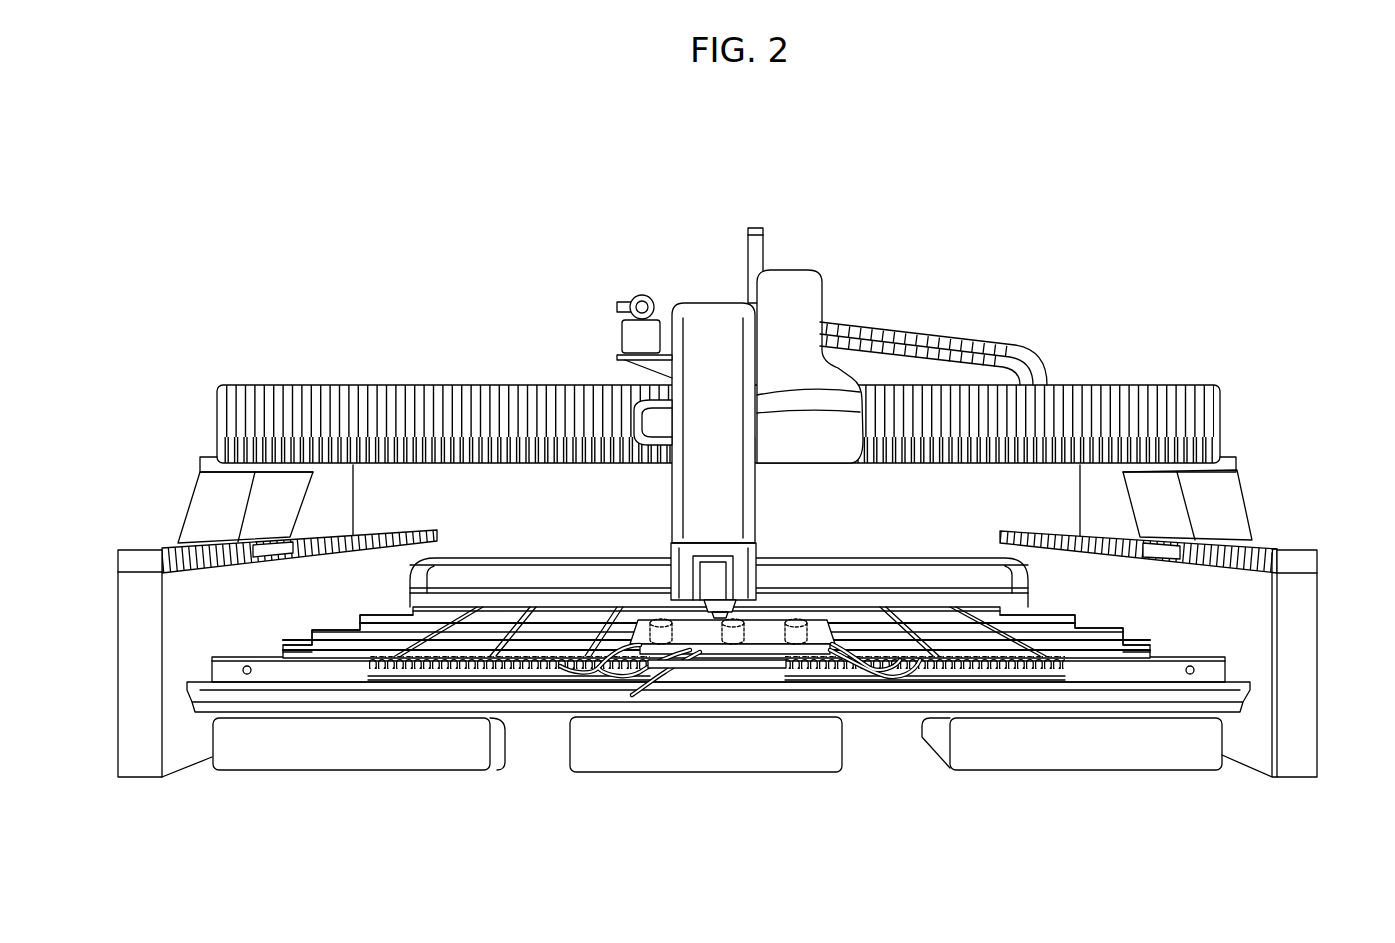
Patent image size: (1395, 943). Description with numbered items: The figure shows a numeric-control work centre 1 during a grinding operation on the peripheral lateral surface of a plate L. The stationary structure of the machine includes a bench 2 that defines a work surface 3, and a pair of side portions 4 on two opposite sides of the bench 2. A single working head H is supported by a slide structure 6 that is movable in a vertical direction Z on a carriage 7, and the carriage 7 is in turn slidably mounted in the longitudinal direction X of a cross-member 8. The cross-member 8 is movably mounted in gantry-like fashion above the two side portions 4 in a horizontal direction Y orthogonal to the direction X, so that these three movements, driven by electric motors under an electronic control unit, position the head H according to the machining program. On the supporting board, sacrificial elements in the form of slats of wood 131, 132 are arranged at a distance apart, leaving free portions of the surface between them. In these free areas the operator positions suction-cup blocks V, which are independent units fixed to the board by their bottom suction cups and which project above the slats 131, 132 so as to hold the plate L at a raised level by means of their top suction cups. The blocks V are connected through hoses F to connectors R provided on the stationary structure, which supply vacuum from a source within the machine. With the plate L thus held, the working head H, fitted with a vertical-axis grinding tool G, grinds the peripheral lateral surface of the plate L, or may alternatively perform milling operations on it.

The numeric-control work centre 1 is at (717, 457).
The bench 2 is at (377, 690).
The work surface 3 is at (510, 608).
The side portions 4 is at (142, 660).
The slide structure 6 is at (697, 496).
The carriage 7 is at (833, 412).
The cross-member 8 is at (1132, 381).
The slat of wood 131 is at (398, 618).
The slat of wood 132 is at (1028, 637).
The connectors R is at (565, 663).
The hoses F is at (615, 655).
The blocks V is at (803, 615).
The grinding tool G is at (705, 608).
The working head H is at (777, 547).
The plate L is at (775, 633).
The longitudinal direction X is at (773, 205).
The horizontal direction Y is at (173, 537).
The vertical direction Z is at (717, 353).